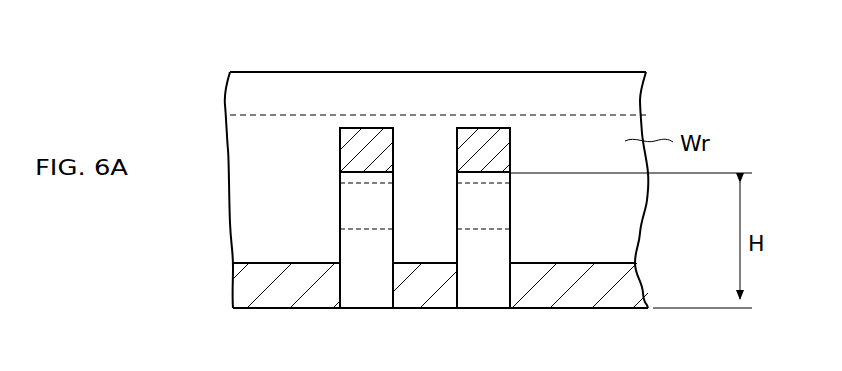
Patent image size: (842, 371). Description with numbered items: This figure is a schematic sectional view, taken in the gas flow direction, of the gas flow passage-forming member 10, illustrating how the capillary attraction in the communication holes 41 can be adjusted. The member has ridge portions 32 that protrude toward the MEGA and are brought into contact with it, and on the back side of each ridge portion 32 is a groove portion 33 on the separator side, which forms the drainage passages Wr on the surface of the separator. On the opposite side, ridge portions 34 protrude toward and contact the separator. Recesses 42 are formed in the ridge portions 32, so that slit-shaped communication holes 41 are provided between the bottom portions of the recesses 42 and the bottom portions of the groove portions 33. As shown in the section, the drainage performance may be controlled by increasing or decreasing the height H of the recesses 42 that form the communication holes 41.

The gas flow passage-forming member 10 is at (615, 66).
The ridge portion 32 is at (253, 308).
The groove portion 33 is at (250, 170).
The ridge portion 34 is at (255, 71).
The communication hole 41 is at (340, 178).
The recess 42 is at (367, 172).